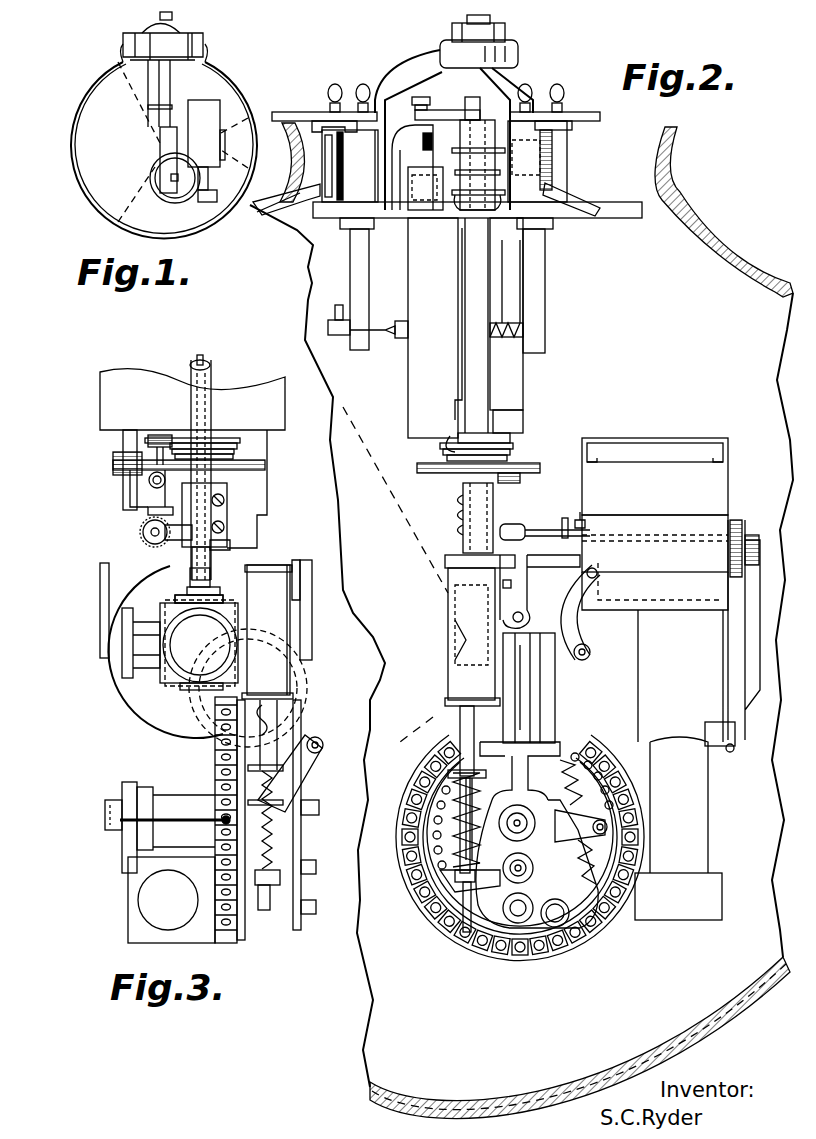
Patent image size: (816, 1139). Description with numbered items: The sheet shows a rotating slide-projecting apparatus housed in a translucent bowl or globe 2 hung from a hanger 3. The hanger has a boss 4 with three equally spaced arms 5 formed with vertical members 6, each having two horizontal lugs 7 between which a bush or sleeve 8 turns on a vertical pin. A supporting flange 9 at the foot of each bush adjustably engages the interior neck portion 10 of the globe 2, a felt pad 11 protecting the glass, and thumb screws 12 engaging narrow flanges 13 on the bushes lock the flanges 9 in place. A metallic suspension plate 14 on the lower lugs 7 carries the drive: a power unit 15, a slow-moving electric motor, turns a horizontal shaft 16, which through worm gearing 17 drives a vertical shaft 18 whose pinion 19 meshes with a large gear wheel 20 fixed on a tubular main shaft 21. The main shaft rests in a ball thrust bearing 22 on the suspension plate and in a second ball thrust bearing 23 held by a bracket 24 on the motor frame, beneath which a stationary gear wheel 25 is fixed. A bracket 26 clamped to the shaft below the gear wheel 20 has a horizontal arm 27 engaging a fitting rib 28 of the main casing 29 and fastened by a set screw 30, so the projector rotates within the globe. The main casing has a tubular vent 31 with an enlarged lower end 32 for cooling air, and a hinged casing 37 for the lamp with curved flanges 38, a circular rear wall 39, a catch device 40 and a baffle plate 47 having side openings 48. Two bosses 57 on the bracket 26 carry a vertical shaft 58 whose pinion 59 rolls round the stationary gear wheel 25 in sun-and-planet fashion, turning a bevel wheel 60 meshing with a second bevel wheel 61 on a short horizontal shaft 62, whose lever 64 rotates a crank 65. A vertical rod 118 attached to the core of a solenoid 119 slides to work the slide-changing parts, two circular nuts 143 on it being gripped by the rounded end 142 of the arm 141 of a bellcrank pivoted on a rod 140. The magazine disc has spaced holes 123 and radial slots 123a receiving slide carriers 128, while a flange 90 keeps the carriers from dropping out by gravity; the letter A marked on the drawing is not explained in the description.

In FIG. 1, the bowl or globe 2 is at (164, 141).
In FIG. 2, the bowl or globe 2 is at (288, 160).
In FIG. 1, the hanger 3 is at (177, 48).
In FIG. 2, the hanger 3 is at (467, 82).
In FIG. 2, the boss 4 is at (510, 50).
In FIG. 2, the arms 5 is at (404, 82).
In FIG. 2, the vertical members 6 is at (376, 182).
In FIG. 2, the horizontal lugs 7 is at (296, 114).
In FIG. 2, the bush or sleeve 8 is at (343, 158).
In FIG. 2, the supporting flange 9 is at (300, 205).
In FIG. 2, the interior neck portion 10 is at (283, 200).
In FIG. 2, the pad 11 is at (278, 212).
In FIG. 2, the thumb screws 12 is at (350, 95).
In FIG. 2, the narrow flanges 13 is at (320, 121).
In FIG. 2, the suspension plate 14 is at (630, 221).
In FIG. 2, the power unit 15 is at (433, 328).
In FIG. 3, the power unit 15 is at (192, 399).
In FIG. 2, the horizontal shaft 16 is at (400, 338).
In FIG. 2, the worm gearing 17 is at (522, 330).
In FIG. 2, the vertical shaft 18 is at (512, 282).
In FIG. 3, the vertical shaft 18 is at (124, 438).
In FIG. 2, the pinion 19 is at (522, 479).
In FIG. 3, the pinion 19 is at (114, 462).
In FIG. 2, the large gear wheel 20 is at (540, 467).
In FIG. 3, the large gear wheel 20 is at (266, 465).
In FIG. 2, the main shaft 21 is at (480, 396).
In FIG. 3, the main shaft 21 is at (215, 370).
In FIG. 2, the ball thrust bearing 22 is at (470, 212).
In FIG. 2, the second ball thrust bearing 23 is at (450, 445).
In FIG. 3, the second ball thrust bearing 23 is at (185, 438).
In FIG. 2, the bracket 24 is at (458, 408).
In FIG. 2, the stationary gear wheel 25 is at (515, 450).
In FIG. 3, the stationary gear wheel 25 is at (238, 445).
In FIG. 2, the bracket 26 is at (460, 518).
In FIG. 3, the bracket 26 is at (228, 505).
In FIG. 2, the horizontal arm 27 is at (545, 548).
In FIG. 3, the horizontal arm 27 is at (225, 536).
In FIG. 3, the fitting rib 28 is at (228, 548).
In FIG. 2, the main casing 29 is at (620, 655).
In FIG. 3, the main casing 29 is at (138, 570).
In FIG. 2, the set screw 30 is at (535, 519).
In FIG. 2, the tubular vent 31 is at (679, 805).
In FIG. 2, the enlarged lower end 32 is at (678, 896).
In FIG. 2, the hinged casing 37 is at (670, 546).
In FIG. 2, the curved flanges 38 is at (655, 586).
In FIG. 2, the rear wall 39 is at (732, 746).
In FIG. 2, the catch device 40 is at (576, 630).
In FIG. 2, the baffle plate 47 is at (655, 460).
In FIG. 2, the side openings 48 is at (680, 455).
In FIG. 3, the bosses 57 is at (150, 480).
In FIG. 3, the vertical shaft 58 is at (151, 480).
In FIG. 3, the pinion 59 is at (158, 436).
In FIG. 3, the bevel wheel 60 is at (148, 511).
In FIG. 3, the second bevel wheel 61 is at (144, 531).
In FIG. 2, the short horizontal shaft 62 is at (510, 556).
In FIG. 3, the short horizontal shaft 62 is at (150, 541).
In FIG. 2, the lever 64 is at (565, 522).
In FIG. 2, the crank 65 is at (582, 518).
In FIG. 3, the flange 90 is at (120, 860).
In FIG. 2, the vertical rod 118 is at (470, 920).
In FIG. 2, the solenoid 119 is at (472, 637).
In FIG. 3, the solenoid 119 is at (269, 632).
In FIG. 3, the spaced holes 123 is at (220, 760).
In FIG. 2, the radial slots 123a is at (448, 925).
In FIG. 3, the radial slots 123a is at (218, 806).
In FIG. 3, the carrier 128 is at (138, 925).
In FIG. 3, the rod 140 is at (323, 745).
In FIG. 3, the arm 141 is at (290, 776).
In FIG. 3, the rounded end 142 is at (286, 800).
In FIG. 3, the circular nuts 143 is at (292, 816).
In FIG. 2, the direction arrow A is at (533, 601).